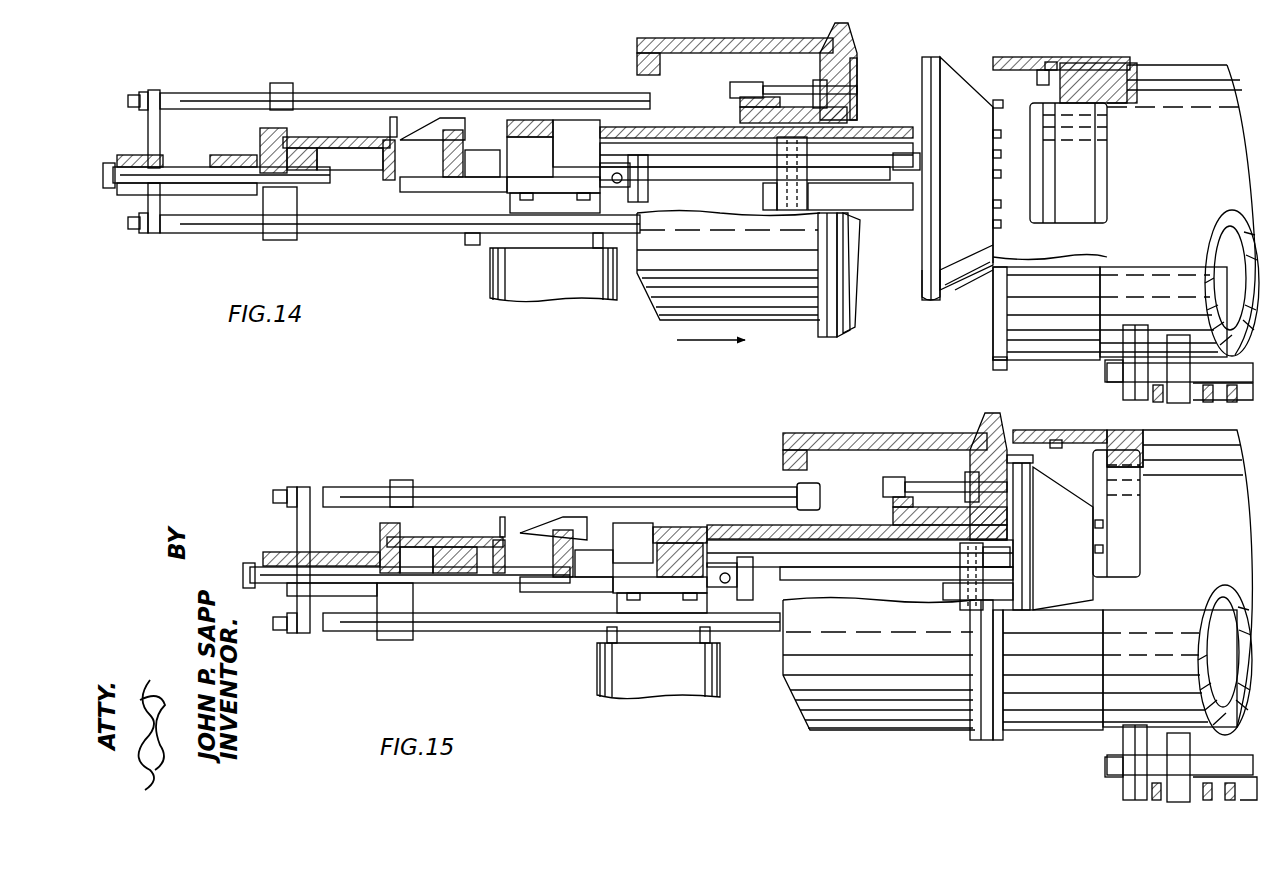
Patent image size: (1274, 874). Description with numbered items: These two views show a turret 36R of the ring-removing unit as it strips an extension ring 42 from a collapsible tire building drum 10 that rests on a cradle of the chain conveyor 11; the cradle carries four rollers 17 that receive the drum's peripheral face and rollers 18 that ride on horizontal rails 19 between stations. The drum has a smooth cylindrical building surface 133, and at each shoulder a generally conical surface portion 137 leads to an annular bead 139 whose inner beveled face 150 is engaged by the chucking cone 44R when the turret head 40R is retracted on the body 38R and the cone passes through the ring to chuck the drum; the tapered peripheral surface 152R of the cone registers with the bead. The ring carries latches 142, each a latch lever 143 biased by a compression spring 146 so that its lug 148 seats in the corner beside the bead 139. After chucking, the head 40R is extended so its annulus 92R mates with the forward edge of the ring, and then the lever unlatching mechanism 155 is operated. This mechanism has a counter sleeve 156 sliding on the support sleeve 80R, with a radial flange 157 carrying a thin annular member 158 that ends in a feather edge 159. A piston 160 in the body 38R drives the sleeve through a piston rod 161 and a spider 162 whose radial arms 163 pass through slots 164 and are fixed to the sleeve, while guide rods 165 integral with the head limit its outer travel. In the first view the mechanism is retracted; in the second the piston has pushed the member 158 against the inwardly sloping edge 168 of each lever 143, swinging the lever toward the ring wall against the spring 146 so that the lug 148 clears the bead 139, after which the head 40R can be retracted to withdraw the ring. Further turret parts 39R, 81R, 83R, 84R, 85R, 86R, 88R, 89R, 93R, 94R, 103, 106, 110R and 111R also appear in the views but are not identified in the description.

In FIG. 14, the tire building drum 10 is at (1205, 188).
In FIG. 15, the tire building drum 10 is at (1200, 560).
In FIG. 14, the conveyor 11 is at (1207, 400).
In FIG. 14, the rollers 17 is at (1137, 368).
In FIG. 15, the rollers 17 is at (1133, 762).
In FIG. 14, the rollers 18 is at (1173, 372).
In FIG. 15, the rollers 18 is at (1182, 743).
In FIG. 14, the horizontal rails 19 is at (1157, 400).
In FIG. 15, the horizontal rails 19 is at (1150, 788).
In FIG. 14, the turret 36R is at (643, 317).
In FIG. 15, the turret 36R is at (770, 707).
In FIG. 14, the body 38R is at (620, 133).
In FIG. 15, the body 38R is at (720, 533).
In FIG. 14, the cylinder 39R is at (553, 288).
In FIG. 15, the cylinder 39R is at (663, 688).
In FIG. 14, the turret head 40R is at (657, 290).
In FIG. 15, the turret head 40R is at (887, 717).
In FIG. 14, the extension ring 42 is at (1052, 360).
In FIG. 15, the extension ring 42 is at (1040, 740).
In FIG. 14, the chucking cone 44R is at (942, 287).
In FIG. 15, the chucking cone 44R is at (1093, 573).
In FIG. 14, the support sleeve 80R is at (700, 127).
In FIG. 15, the support sleeve 80R is at (817, 525).
In FIG. 14, the bearing 81R is at (323, 158).
In FIG. 15, the bearing 81R is at (430, 573).
In FIG. 14, the shaft 83R is at (177, 173).
In FIG. 15, the shaft 83R is at (400, 573).
In FIG. 14, the bearing block 84R is at (253, 170).
In FIG. 15, the bearing block 84R is at (322, 572).
In FIG. 14, the bracket plate 85R is at (138, 128).
In FIG. 15, the bracket plate 85R is at (293, 525).
In FIG. 14, the bracket plate 86R is at (147, 203).
In FIG. 15, the bracket plate 86R is at (300, 630).
In FIG. 14, the rod 88R is at (367, 98).
In FIG. 15, the rod 88R is at (512, 495).
In FIG. 14, the block 89R is at (280, 240).
In FIG. 15, the block 89R is at (400, 480).
In FIG. 14, the annulus 92R is at (830, 333).
In FIG. 14, the ring 93R is at (840, 327).
In FIG. 14, the ring 94R is at (858, 337).
In FIG. 14, the lip 103 is at (1003, 365).
In FIG. 14, the ring 106 is at (1062, 110).
In FIG. 14, the cylinder 110R is at (532, 242).
In FIG. 15, the cylinder 110R is at (637, 640).
In FIG. 14, the bearing 111R is at (565, 127).
In FIG. 15, the bearing 111R is at (683, 523).
In FIG. 14, the peripheral building surface 133 is at (1195, 67).
In FIG. 14, the conical surface portion 137 is at (1073, 62).
In FIG. 14, the annular bead 139 is at (1027, 100).
In FIG. 14, the latches 142 is at (1032, 82).
In FIG. 15, the latches 142 is at (1037, 433).
In FIG. 14, the latch lever 143 is at (1043, 87).
In FIG. 14, the compression spring 146 is at (1052, 67).
In FIG. 15, the compression spring 146 is at (1057, 443).
In FIG. 15, the projecting lug 148 is at (1033, 467).
In FIG. 14, the beveled face 150 is at (1037, 150).
In FIG. 14, the peripheral surface of cone 152R is at (930, 37).
In FIG. 14, the lever unlatching mechanism 155 is at (800, 60).
In FIG. 15, the lever unlatching mechanism 155 is at (953, 477).
In FIG. 14, the counter sleeve 156 is at (827, 105).
In FIG. 14, the radial flange 157 is at (827, 108).
In FIG. 14, the annular member 158 is at (827, 60).
In FIG. 15, the annular member 158 is at (975, 510).
In FIG. 14, the feather edge 159 is at (853, 72).
In FIG. 14, the piston 160 is at (500, 158).
In FIG. 15, the piston 160 is at (648, 550).
In FIG. 14, the piston rod 161 is at (653, 180).
In FIG. 15, the piston rod 161 is at (860, 577).
In FIG. 14, the spider 162 is at (807, 200).
In FIG. 15, the spider 162 is at (967, 597).
In FIG. 14, the radial arms 163 is at (777, 147).
In FIG. 15, the radial arms 163 is at (953, 530).
In FIG. 14, the slots 164 is at (810, 125).
In FIG. 15, the slots 164 is at (957, 523).
In FIG. 14, the guide rods 165 is at (843, 92).
In FIG. 15, the guide rods 165 is at (883, 487).
In FIG. 14, the inwardly sloping edge 168 is at (993, 98).
In FIG. 15, the inwardly sloping edge 168 is at (1013, 420).